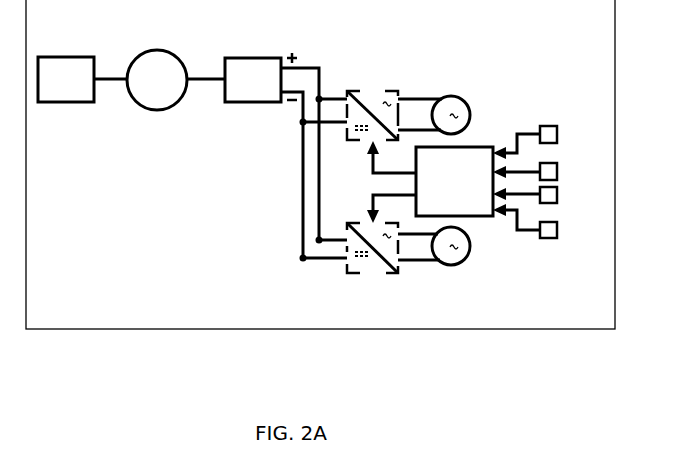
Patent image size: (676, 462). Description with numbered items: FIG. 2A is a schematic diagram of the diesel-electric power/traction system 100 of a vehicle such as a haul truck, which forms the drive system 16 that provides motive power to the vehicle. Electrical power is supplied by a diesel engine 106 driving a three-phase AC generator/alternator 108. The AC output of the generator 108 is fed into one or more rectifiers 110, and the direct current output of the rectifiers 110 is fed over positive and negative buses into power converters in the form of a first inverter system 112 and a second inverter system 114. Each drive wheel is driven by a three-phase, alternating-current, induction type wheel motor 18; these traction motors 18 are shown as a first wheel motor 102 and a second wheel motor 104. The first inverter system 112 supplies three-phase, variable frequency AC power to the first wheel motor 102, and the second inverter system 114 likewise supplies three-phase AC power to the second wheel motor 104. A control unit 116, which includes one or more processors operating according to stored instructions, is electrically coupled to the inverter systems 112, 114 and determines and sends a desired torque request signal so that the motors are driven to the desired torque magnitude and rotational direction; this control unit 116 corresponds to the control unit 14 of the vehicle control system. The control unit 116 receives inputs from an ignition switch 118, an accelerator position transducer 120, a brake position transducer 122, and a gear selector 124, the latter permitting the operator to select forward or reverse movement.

The control unit 14 is at (507, 259).
The drive system 16 is at (63, 347).
The traction motor 18 is at (465, 70).
The power/traction system 100 is at (318, 329).
The first wheel motor 102 is at (465, 105).
The second wheel motor 104 is at (457, 267).
The diesel engine 106 is at (62, 57).
The generator/alternator 108 is at (165, 51).
The rectifier 110 is at (255, 58).
The first inverter system 112 is at (375, 90).
The second inverter system 114 is at (373, 277).
The control unit 116 is at (497, 247).
The ignition switch 118 is at (552, 123).
The accelerator position transducer 120 is at (560, 168).
The brake position transducer 122 is at (560, 200).
The gear selector 124 is at (562, 228).